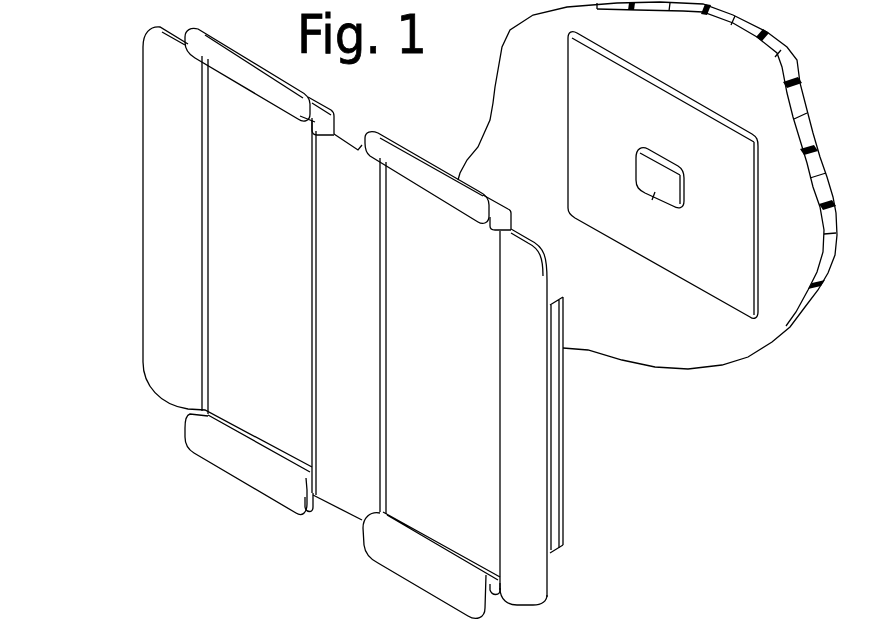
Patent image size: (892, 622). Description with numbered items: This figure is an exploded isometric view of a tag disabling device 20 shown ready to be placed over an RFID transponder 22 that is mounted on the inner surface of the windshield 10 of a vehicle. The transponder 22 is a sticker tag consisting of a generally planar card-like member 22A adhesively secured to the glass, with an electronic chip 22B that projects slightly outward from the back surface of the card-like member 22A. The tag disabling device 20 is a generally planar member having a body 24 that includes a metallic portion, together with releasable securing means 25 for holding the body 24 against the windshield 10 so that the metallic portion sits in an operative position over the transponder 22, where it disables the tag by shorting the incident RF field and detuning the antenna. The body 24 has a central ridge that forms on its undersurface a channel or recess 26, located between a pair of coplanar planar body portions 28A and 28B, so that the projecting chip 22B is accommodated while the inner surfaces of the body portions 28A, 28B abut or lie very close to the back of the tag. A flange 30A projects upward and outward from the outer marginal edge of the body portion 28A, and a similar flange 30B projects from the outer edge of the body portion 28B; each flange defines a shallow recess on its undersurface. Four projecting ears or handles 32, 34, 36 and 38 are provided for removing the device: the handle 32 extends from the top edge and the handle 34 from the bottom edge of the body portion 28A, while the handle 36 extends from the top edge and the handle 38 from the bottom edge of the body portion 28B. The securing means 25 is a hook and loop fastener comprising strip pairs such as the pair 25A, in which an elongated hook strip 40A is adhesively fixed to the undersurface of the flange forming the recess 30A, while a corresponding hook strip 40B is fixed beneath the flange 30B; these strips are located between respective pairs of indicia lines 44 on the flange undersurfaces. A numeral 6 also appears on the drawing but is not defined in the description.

The windshield 10 is at (730, 343).
The tag disabling device 20 is at (398, 311).
The RFID transponder 22 is at (634, 184).
The card-like member 22A is at (608, 143).
The electronic chip 22B is at (665, 190).
The body 24 is at (190, 276).
The releasable securing means 25 is at (505, 354).
The pair of cooperating hook and loop strips 25A is at (269, 618).
The channel or recess 26 is at (345, 473).
The planar body portion 28A is at (438, 413).
The planar body portion 28B is at (235, 327).
The flange 30A is at (530, 573).
The flange 30B is at (172, 338).
The handle 32 is at (397, 155).
The handle 34 is at (430, 567).
The handle 36 is at (260, 75).
The handle 38 is at (248, 465).
The hook strip 40A is at (553, 455).
The hook strip 40B is at (560, 543).
The element 6 is at (134, 618).
The indicia lines 44 is at (176, 618).